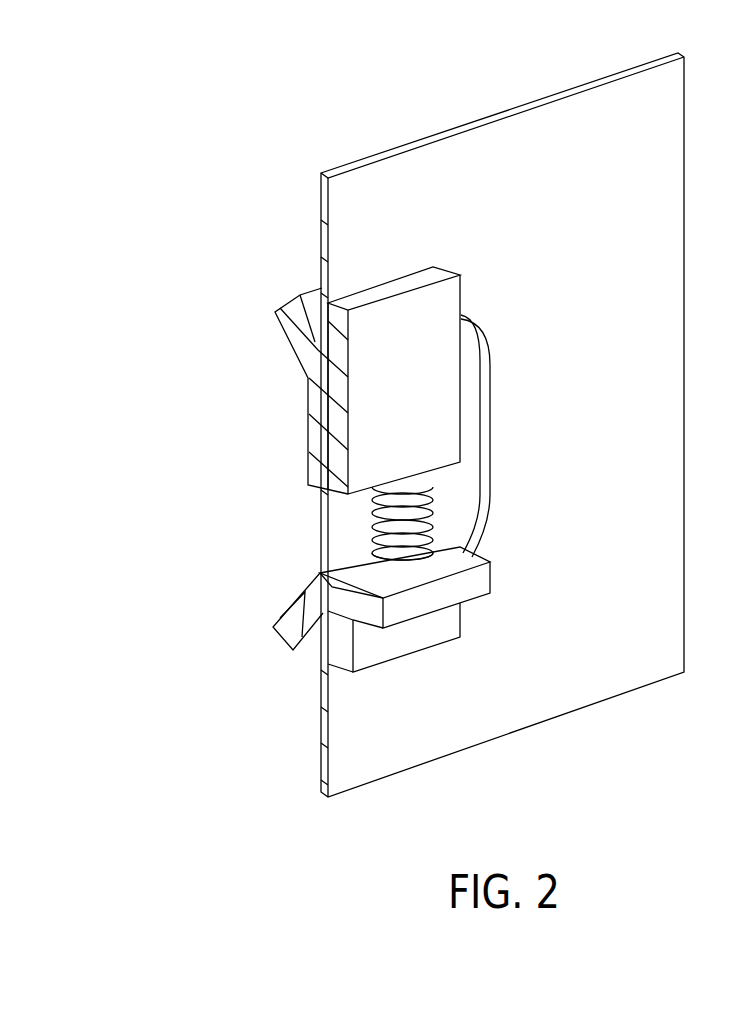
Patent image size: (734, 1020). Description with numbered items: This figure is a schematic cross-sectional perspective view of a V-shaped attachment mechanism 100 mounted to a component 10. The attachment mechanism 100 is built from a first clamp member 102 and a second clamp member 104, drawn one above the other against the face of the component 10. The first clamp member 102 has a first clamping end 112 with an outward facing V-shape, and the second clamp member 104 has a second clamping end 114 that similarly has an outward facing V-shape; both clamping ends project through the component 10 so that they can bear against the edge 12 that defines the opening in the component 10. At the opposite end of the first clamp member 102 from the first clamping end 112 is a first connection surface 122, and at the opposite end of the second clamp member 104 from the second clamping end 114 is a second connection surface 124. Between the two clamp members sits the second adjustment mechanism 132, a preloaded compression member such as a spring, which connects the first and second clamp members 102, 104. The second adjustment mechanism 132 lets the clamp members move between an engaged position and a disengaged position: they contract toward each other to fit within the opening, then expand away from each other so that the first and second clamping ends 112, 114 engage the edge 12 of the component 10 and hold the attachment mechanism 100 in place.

The component 10 is at (615, 668).
The edge 12 is at (485, 455).
The attachment mechanism 100 is at (366, 120).
The first clamp member 102 is at (300, 264).
The second clamp member 104 is at (397, 685).
The first clamping end 112 is at (312, 302).
The second clamping end 114 is at (308, 645).
The first connection surface 122 is at (330, 499).
The second connection surface 124 is at (336, 576).
The second adjustment mechanism 132 is at (412, 540).